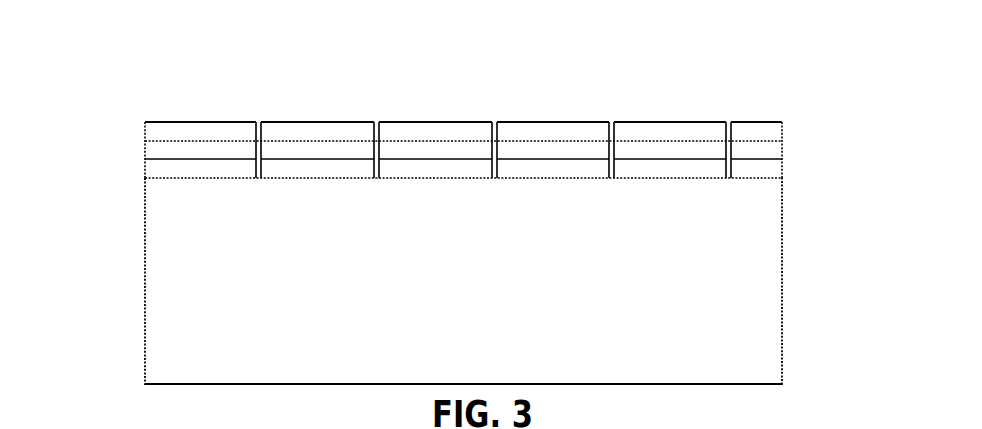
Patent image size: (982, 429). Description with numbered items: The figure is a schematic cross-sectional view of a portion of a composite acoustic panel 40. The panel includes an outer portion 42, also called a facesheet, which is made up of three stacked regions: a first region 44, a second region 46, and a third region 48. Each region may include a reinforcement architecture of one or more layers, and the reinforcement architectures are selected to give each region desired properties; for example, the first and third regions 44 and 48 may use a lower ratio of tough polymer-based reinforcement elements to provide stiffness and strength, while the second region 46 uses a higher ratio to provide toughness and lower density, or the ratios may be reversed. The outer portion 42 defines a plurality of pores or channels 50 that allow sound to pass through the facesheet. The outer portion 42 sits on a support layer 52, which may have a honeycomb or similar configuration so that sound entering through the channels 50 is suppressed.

The composite acoustic panel 40 is at (102, 78).
The outer portion 42 is at (790, 122).
The first region 44 is at (155, 172).
The second region 46 is at (155, 152).
The third region 48 is at (155, 132).
The pores or channels 50 is at (251, 105).
The support layer 52 is at (763, 297).